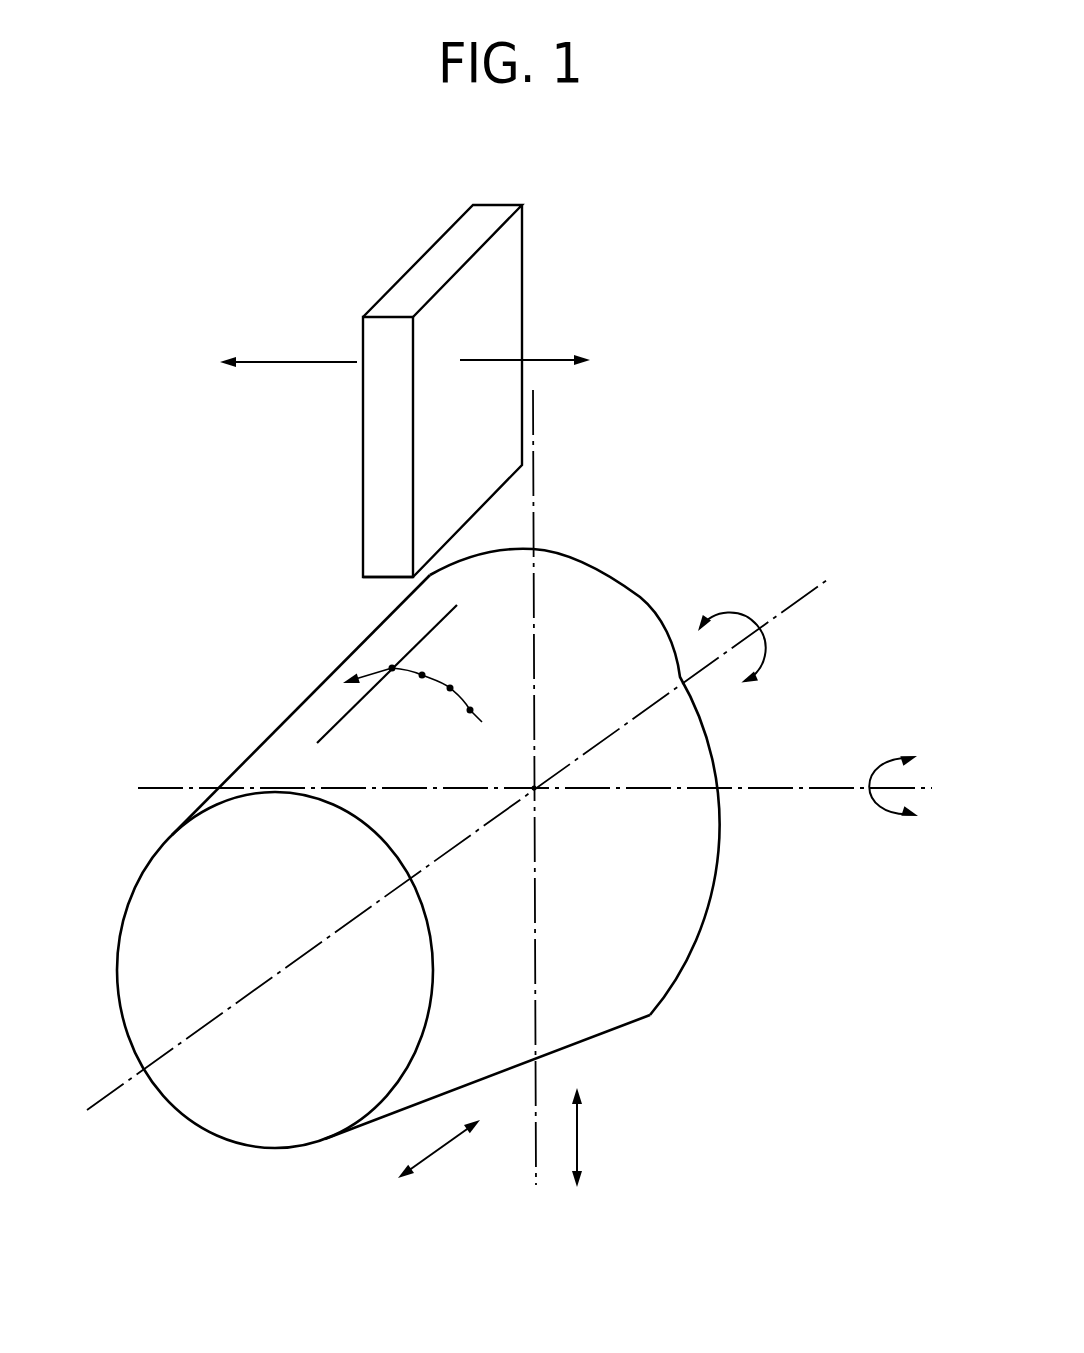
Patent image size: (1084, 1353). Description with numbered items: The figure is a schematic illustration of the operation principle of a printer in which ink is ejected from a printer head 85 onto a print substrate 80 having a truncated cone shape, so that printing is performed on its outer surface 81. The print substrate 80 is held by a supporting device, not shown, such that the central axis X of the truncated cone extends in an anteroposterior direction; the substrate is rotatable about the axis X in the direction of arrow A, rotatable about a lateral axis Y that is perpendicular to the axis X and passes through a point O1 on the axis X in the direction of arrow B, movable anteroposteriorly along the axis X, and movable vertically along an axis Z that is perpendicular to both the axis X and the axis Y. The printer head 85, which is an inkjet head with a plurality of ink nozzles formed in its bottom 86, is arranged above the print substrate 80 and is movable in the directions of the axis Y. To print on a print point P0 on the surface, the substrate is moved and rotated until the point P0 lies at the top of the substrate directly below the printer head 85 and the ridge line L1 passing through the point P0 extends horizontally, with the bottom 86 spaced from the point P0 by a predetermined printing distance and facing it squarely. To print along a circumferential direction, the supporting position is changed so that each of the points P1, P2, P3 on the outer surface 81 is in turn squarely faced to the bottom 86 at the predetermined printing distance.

The print substrate 80 is at (458, 848).
The outer surface 81 is at (643, 973).
The printer head 85 is at (456, 382).
The bottom 86 is at (388, 577).
The point O1 is at (534, 788).
The central axis X is at (797, 602).
The axis Y is at (797, 788).
The axis Z is at (537, 495).
The arrow A is at (732, 608).
The arrow B is at (873, 815).
The ridge line L1 is at (337, 720).
The print point P0 is at (392, 668).
The point P1 is at (424, 675).
The point P2 is at (450, 688).
The point P3 is at (473, 710).